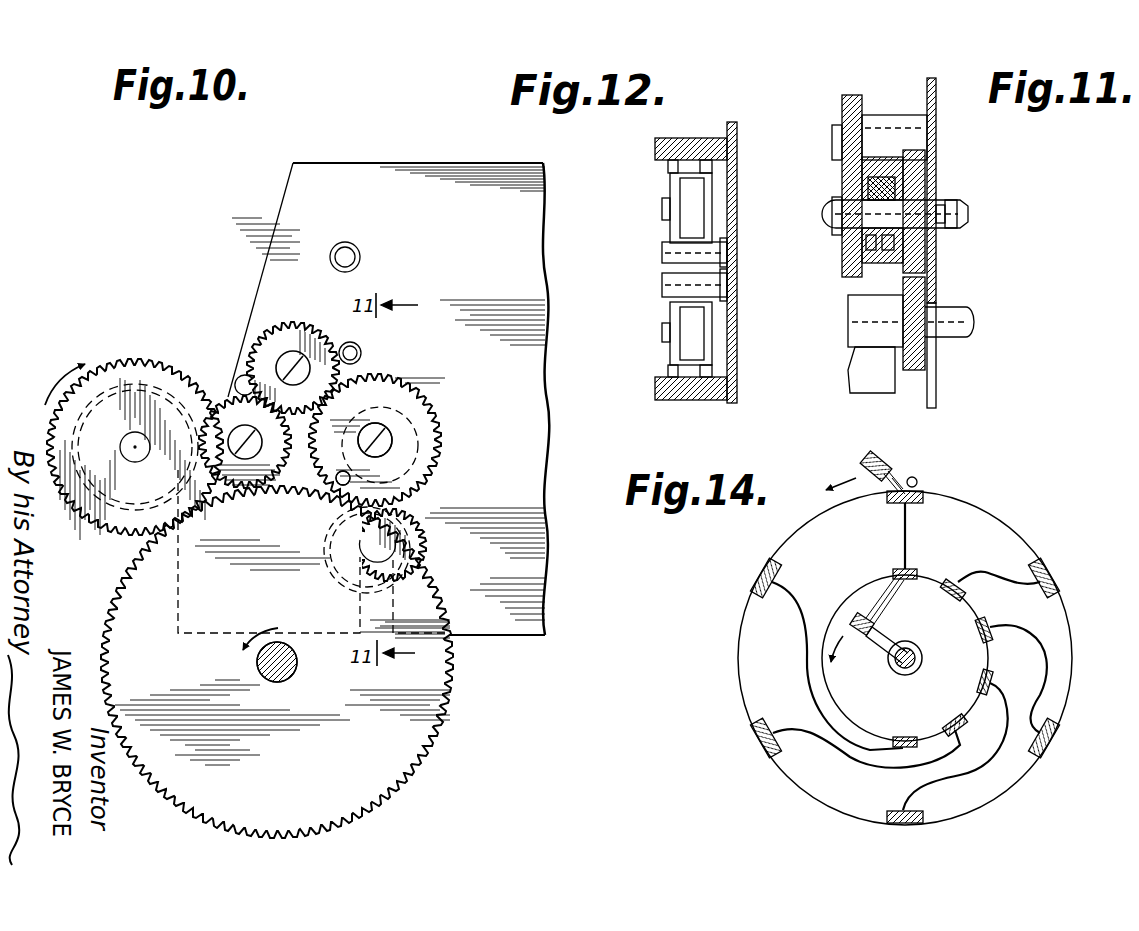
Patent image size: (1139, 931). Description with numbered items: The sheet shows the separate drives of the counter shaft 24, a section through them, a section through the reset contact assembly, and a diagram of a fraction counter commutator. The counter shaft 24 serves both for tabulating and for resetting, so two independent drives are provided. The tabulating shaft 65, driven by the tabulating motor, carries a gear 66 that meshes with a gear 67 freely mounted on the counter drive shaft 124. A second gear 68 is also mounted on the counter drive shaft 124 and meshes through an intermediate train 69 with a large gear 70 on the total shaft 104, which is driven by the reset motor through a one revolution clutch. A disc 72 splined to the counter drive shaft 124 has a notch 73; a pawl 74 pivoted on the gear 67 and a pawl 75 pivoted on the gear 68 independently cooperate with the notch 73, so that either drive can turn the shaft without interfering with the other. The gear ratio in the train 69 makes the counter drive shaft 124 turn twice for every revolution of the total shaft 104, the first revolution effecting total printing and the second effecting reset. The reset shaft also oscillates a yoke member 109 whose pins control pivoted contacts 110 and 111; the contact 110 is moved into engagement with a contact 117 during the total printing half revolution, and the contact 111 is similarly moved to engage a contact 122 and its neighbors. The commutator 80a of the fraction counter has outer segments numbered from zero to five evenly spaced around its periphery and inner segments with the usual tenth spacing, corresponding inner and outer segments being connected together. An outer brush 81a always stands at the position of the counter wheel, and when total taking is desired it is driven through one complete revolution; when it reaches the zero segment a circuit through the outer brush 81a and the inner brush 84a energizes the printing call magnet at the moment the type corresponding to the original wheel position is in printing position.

In FIG. 10, the intermediate train 69 is at (260, 352).
In FIG. 11, the intermediate train 69 is at (858, 110).
In FIG. 10, the disc 72 is at (440, 422).
In FIG. 11, the disc 72 is at (895, 178).
In FIG. 10, the second gear 68 is at (422, 458).
In FIG. 11, the second gear 68 is at (860, 237).
In FIG. 10, the pawl 75 is at (429, 481).
In FIG. 11, the pawl 75 is at (865, 256).
In FIG. 11, the pawl 74 is at (880, 266).
In FIG. 10, the gear 66 is at (407, 530).
In FIG. 11, the gear 66 is at (918, 362).
In FIG. 10, the tabulating shaft 65 is at (432, 577).
In FIG. 11, the tabulating shaft 65 is at (950, 325).
In FIG. 10, the large gear 70 is at (432, 712).
In FIG. 10, the total shaft 104 is at (293, 678).
In FIG. 10, the counter drive shaft 124 is at (387, 437).
In FIG. 12, the contact 117 is at (688, 154).
In FIG. 12, the contact 110 is at (675, 170).
In FIG. 12, the yoke member 109 is at (662, 216).
In FIG. 12, the contact 111 is at (670, 372).
In FIG. 12, the contact 122 is at (658, 388).
In FIG. 11, the gear 67 is at (916, 186).
In FIG. 11, the counter shaft 24 is at (946, 212).
In FIG. 11, the notch 73 is at (925, 235).
In FIG. 14, the outer brush 81a is at (898, 473).
In FIG. 14, the commutator 80a is at (998, 538).
In FIG. 14, the inner brush 84a is at (885, 610).